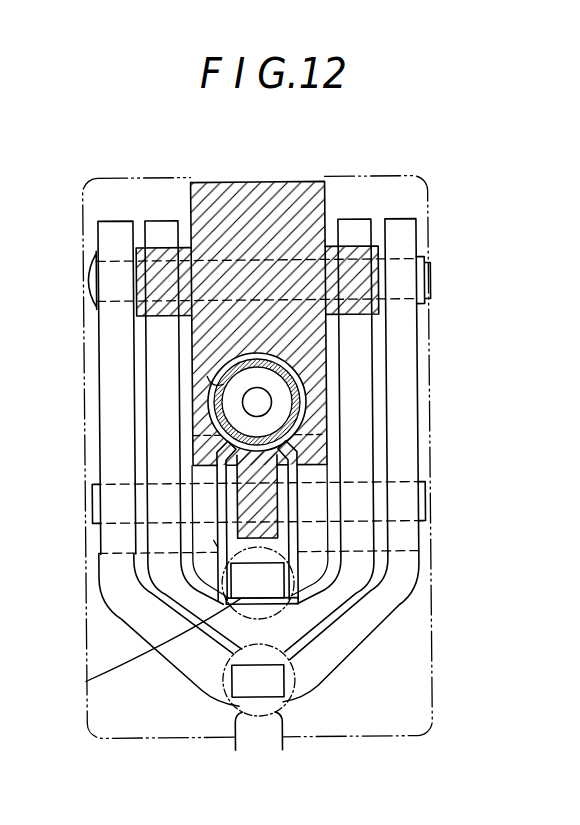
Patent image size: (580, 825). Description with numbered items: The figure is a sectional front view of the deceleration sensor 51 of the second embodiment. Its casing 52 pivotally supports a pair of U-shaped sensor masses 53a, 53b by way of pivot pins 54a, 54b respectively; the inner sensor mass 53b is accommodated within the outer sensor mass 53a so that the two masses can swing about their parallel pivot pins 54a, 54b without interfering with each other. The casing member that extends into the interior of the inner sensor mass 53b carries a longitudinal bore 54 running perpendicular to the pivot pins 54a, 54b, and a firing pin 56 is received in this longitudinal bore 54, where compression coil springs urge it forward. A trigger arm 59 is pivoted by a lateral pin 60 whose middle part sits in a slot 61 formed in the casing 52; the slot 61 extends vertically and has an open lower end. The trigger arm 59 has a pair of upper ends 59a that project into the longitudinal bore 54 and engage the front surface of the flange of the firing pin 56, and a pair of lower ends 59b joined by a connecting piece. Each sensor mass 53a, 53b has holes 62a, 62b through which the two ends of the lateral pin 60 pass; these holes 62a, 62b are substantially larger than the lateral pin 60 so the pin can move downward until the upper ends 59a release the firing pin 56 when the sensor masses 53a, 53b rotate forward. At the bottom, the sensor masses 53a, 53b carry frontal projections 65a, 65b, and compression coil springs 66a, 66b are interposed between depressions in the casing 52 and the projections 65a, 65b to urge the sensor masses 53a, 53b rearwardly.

The deceleration sensor 51 is at (411, 160).
The casing 52 is at (262, 182).
The pivot pin 54b is at (350, 258).
The pivot pin 54a is at (433, 287).
The sensor mass 53a is at (413, 334).
The sensor mass 53b is at (370, 374).
The longitudinal bore 54 is at (215, 380).
The firing pin 56 is at (212, 406).
The trigger arm 59 is at (218, 550).
The upper ends of trigger arm 59a is at (305, 440).
The lower ends of trigger arm 59b is at (230, 600).
The lateral pin 60 is at (217, 540).
The slot 61 is at (83, 680).
The holes 62a is at (400, 553).
The holes 62b is at (350, 553).
The frontal projection 65a is at (267, 695).
The frontal projection 65b is at (300, 592).
The compression coil spring 66a is at (233, 742).
The compression coil spring 66b is at (290, 605).